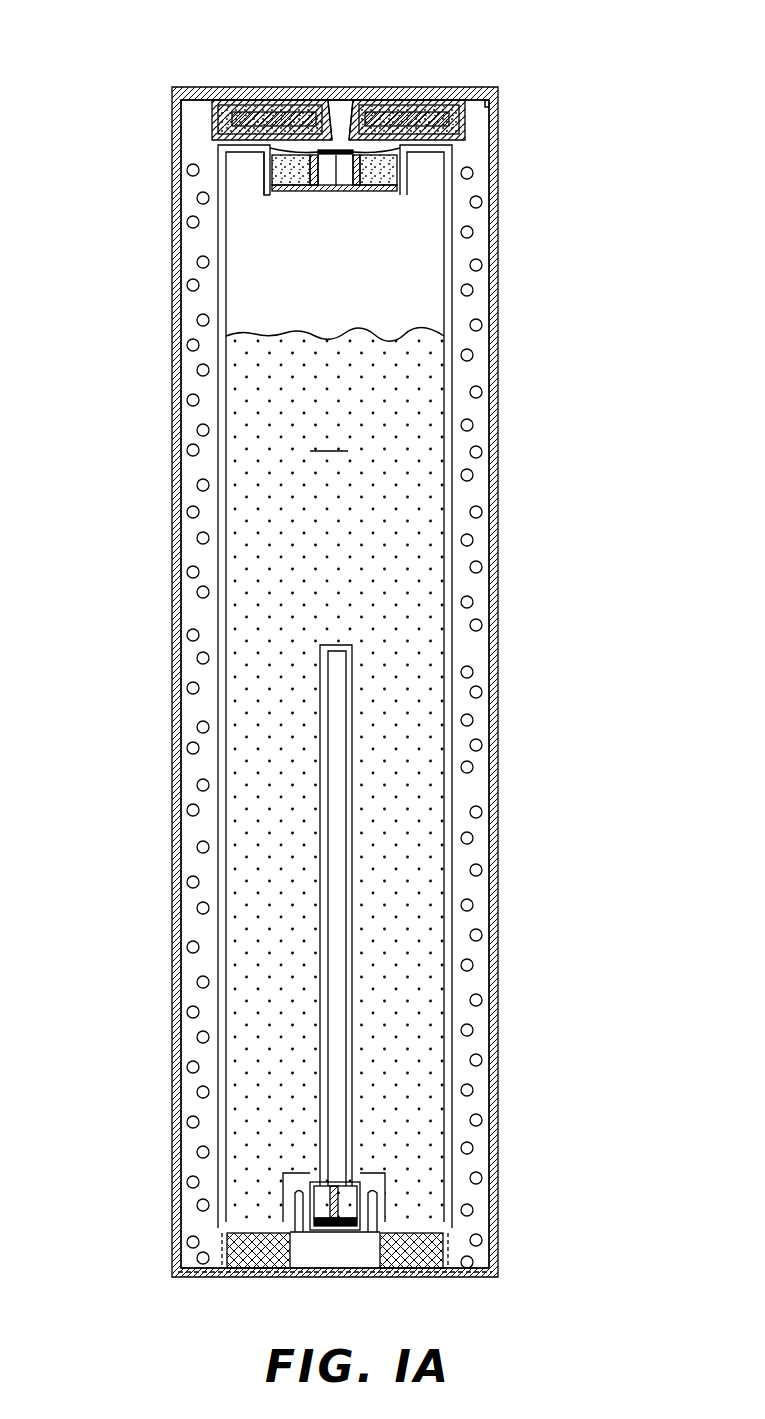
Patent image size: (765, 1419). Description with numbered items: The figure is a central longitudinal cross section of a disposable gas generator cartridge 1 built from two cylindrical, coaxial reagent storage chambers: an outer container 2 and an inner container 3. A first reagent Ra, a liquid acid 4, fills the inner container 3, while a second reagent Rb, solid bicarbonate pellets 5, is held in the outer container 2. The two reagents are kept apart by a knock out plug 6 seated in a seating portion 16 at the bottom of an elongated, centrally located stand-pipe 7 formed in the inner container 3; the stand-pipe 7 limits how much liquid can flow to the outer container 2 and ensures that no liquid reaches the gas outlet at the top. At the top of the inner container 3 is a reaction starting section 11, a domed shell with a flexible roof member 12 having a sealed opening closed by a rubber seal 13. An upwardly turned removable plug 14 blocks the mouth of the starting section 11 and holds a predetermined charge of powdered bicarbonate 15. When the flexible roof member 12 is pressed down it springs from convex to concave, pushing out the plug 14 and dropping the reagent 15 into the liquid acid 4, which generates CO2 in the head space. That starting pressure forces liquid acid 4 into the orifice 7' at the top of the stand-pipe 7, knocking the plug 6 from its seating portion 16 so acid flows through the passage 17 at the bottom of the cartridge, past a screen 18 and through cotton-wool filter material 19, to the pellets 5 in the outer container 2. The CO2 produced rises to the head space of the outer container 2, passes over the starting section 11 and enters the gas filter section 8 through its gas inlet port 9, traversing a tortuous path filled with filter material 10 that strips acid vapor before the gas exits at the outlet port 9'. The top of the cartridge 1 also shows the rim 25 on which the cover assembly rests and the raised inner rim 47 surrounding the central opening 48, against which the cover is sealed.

The disposable cartridge 1 is at (162, 743).
The outer container 2 is at (190, 598).
The inner container 3 is at (232, 398).
The liquid acid 4 is at (418, 503).
The bicarbonate pellets 5 is at (490, 266).
The knock out plug 6 is at (340, 1228).
The stand-pipe 7 is at (423, 915).
The orifice 7' is at (437, 880).
The gas filter section 8 is at (465, 123).
The gas inlet port 9 is at (335, 199).
The outlet port 9' is at (314, 80).
The filter material 10 is at (226, 103).
The reaction starting section 11 is at (266, 188).
The flexible roof member 12 is at (285, 147).
The rubber seal 13 is at (352, 151).
The removable plug 14 is at (323, 192).
The powdered bicarbonate reagent 15 is at (277, 170).
The seating portion 16 is at (366, 1195).
The passage 17 is at (248, 1230).
The screen 18 is at (225, 1245).
The filter material 19 is at (428, 1252).
The rim 25 is at (492, 90).
The raised inner rim 47 is at (352, 96).
The central opening 48 is at (335, 100).
The first reagent Ra is at (329, 439).
The second reagent Rb is at (373, 182).